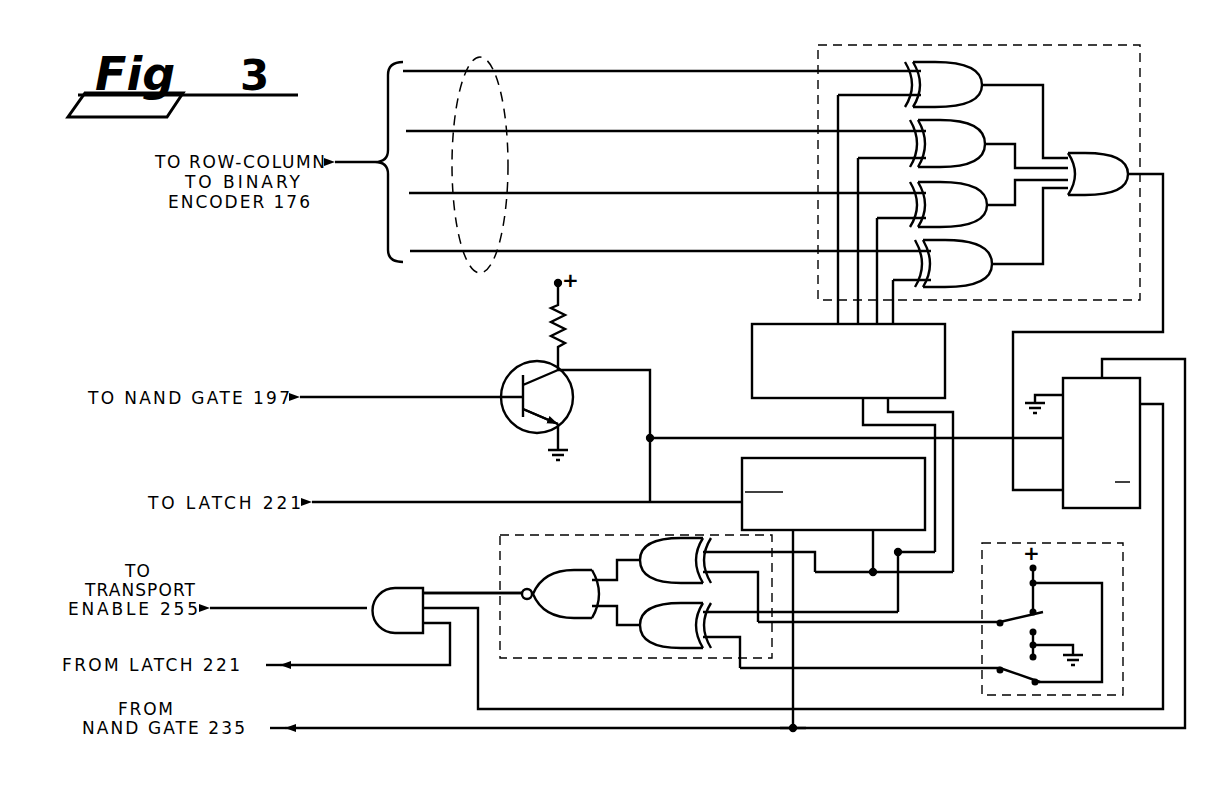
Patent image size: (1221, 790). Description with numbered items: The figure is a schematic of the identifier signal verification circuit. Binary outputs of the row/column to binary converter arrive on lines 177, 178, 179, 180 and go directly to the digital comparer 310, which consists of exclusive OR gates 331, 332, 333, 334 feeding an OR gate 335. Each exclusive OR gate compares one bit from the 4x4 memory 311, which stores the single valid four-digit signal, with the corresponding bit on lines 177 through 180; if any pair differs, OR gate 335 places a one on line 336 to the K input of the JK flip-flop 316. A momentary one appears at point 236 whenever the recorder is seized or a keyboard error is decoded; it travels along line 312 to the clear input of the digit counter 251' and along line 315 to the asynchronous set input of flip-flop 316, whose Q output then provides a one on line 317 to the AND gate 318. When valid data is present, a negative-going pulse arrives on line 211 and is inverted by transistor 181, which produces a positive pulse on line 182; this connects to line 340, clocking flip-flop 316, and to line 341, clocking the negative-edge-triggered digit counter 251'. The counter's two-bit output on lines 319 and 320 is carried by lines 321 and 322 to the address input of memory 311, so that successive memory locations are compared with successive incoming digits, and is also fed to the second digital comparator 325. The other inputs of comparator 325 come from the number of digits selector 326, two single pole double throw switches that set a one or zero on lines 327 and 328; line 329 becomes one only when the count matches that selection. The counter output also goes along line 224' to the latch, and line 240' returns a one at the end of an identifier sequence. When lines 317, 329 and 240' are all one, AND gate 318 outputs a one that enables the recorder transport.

The line 177 is at (594, 71).
The line 178 is at (597, 131).
The line 179 is at (618, 193).
The line 180 is at (640, 251).
The transistor 181 is at (505, 373).
The line 182 is at (622, 370).
The line 211 is at (412, 397).
The line 224' is at (481, 481).
The line 240' is at (358, 644).
The digit counter 251' is at (818, 486).
The digital comparer 310 is at (1143, 80).
The 4x4 memory 311 is at (752, 358).
The line 312 is at (792, 686).
The line 315 is at (925, 730).
The JK flip-flop 316 is at (1082, 378).
The line 317 is at (855, 708).
The AND gate 318 is at (420, 565).
The line 319 is at (872, 556).
The line 320 is at (955, 550).
The line 321 is at (863, 412).
The line 322 is at (955, 425).
The digital comparator 325 is at (605, 660).
The number of digits selector 326 is at (1042, 543).
The line 327 is at (963, 622).
The line 328 is at (955, 669).
The line 329 is at (462, 593).
The exclusive OR gate 331 is at (975, 70).
The exclusive OR gate 332 is at (965, 122).
The exclusive OR gate 333 is at (972, 218).
The exclusive OR gate 334 is at (985, 272).
The OR gate 335 is at (1090, 198).
The line 336 is at (1165, 193).
The line 340 is at (715, 438).
The line 341 is at (692, 502).
The point 236 is at (790, 730).